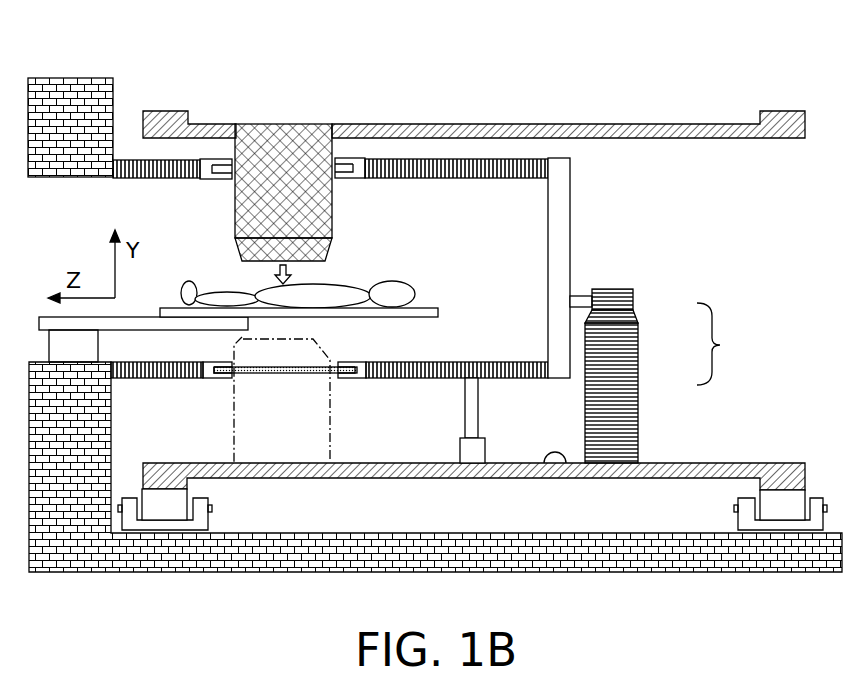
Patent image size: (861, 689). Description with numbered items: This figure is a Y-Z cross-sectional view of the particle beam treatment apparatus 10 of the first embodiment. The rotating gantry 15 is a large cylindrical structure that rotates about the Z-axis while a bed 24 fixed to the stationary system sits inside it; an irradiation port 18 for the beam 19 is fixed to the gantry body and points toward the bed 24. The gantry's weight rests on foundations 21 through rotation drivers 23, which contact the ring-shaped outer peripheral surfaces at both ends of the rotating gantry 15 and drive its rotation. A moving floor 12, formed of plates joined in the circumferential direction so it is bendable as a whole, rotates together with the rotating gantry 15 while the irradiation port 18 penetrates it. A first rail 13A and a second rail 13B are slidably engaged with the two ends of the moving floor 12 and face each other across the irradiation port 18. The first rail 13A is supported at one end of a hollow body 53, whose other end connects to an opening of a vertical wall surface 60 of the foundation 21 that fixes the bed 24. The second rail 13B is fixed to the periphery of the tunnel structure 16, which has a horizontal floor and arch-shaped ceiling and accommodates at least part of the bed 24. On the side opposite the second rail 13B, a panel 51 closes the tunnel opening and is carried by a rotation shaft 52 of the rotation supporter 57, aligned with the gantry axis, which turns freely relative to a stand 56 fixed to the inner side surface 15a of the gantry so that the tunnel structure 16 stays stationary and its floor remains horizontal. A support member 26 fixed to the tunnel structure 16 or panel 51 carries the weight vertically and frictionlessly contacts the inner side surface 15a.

The particle beam treatment apparatus 10 is at (200, 70).
The vertical wall surface 60 is at (113, 107).
The rotating gantry 15 is at (478, 122).
The inner side surface 15a is at (566, 480).
The irradiation port 18 is at (292, 122).
The first rail 13A is at (212, 180).
The second rail 13B is at (350, 180).
The panel 51 is at (572, 202).
The rotation shaft 52 is at (583, 294).
The stand 56 is at (637, 388).
The rotation supporter 57 is at (655, 368).
The hollow body 53 is at (143, 380).
The tunnel structure 16 is at (510, 360).
The moving floor 12 is at (300, 363).
The beam 19 is at (303, 280).
The bed 24 is at (440, 312).
The support member 26 is at (478, 412).
The rotation driver 23 is at (210, 518).
The foundation 21 is at (253, 572).